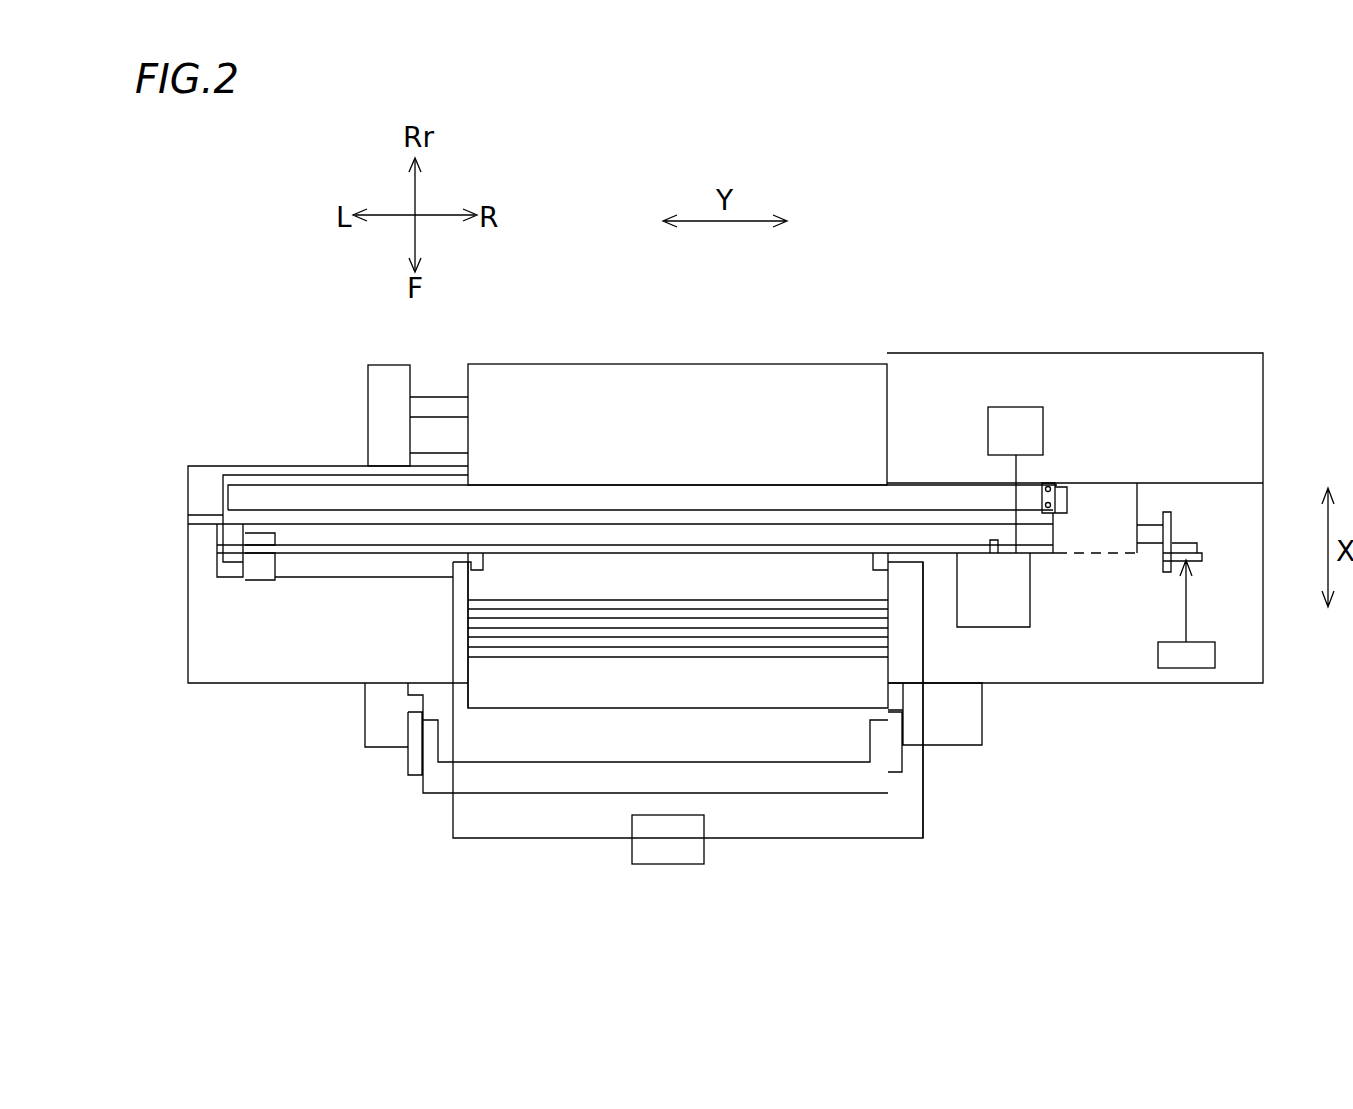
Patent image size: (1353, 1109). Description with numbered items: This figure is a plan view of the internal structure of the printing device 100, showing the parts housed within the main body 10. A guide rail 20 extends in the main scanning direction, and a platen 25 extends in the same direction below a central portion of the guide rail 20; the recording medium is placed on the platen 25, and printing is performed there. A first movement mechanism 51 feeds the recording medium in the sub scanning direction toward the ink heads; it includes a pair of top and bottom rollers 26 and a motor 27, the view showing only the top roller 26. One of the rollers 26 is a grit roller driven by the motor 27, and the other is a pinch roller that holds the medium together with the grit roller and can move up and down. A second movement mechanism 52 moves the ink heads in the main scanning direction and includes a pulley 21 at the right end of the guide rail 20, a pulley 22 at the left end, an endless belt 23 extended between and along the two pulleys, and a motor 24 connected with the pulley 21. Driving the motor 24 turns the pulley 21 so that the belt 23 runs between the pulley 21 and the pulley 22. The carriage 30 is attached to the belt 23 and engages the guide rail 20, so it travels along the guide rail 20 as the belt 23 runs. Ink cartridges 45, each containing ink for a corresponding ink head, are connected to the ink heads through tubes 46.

The printing device 100 is at (289, 316).
The main body 10 is at (341, 487).
The guide rail 20 is at (731, 535).
The pulley 21 is at (1186, 543).
The pulley 22 is at (233, 547).
The belt 23 is at (557, 552).
The motor 24 is at (1184, 668).
The platen 25 is at (797, 570).
The rollers 26 is at (476, 560).
The motor 27 is at (704, 855).
The carriage 30 is at (1005, 627).
The ink cartridges 45 is at (1005, 407).
The tubes 46 is at (1017, 472).
The first movement mechanism 51 is at (427, 602).
The second movement mechanism 52 is at (1214, 527).